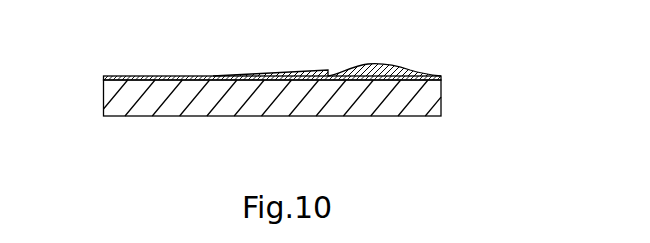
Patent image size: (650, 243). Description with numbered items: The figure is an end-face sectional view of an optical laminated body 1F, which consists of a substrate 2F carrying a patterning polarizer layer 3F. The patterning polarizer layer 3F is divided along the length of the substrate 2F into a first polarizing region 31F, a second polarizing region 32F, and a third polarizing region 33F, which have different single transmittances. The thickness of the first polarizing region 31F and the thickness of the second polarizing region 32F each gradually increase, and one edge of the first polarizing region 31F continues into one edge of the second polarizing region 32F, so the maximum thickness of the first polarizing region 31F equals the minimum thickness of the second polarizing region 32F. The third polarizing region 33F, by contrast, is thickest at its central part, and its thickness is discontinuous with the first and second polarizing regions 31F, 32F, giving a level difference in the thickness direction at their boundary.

The optical laminated body 1F is at (292, 94).
The substrate 2F is at (148, 116).
The patterning polarizer layer 3F is at (281, 51).
The first polarizing region 31F is at (163, 74).
The second polarizing region 32F is at (288, 70).
The third polarizing region 33F is at (398, 66).